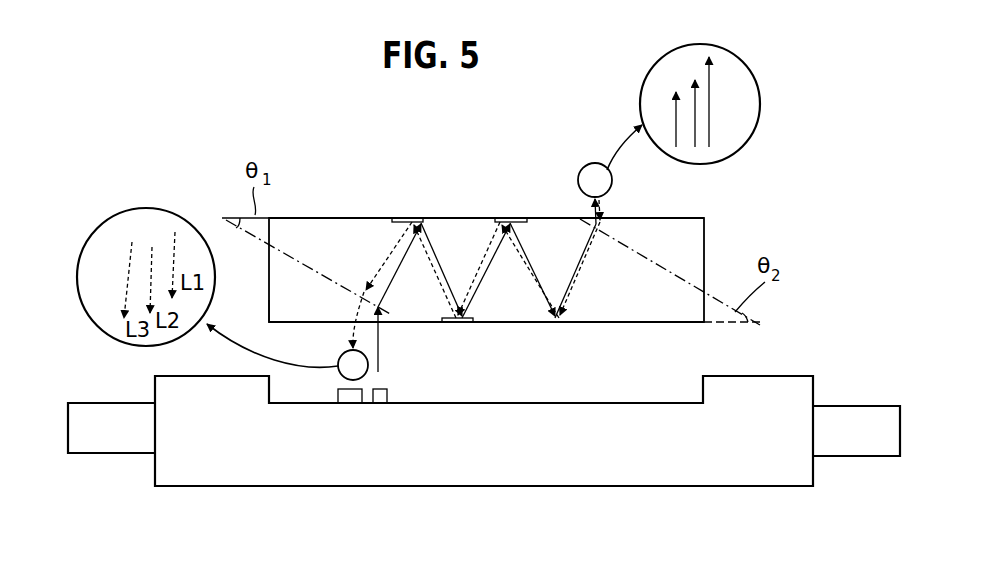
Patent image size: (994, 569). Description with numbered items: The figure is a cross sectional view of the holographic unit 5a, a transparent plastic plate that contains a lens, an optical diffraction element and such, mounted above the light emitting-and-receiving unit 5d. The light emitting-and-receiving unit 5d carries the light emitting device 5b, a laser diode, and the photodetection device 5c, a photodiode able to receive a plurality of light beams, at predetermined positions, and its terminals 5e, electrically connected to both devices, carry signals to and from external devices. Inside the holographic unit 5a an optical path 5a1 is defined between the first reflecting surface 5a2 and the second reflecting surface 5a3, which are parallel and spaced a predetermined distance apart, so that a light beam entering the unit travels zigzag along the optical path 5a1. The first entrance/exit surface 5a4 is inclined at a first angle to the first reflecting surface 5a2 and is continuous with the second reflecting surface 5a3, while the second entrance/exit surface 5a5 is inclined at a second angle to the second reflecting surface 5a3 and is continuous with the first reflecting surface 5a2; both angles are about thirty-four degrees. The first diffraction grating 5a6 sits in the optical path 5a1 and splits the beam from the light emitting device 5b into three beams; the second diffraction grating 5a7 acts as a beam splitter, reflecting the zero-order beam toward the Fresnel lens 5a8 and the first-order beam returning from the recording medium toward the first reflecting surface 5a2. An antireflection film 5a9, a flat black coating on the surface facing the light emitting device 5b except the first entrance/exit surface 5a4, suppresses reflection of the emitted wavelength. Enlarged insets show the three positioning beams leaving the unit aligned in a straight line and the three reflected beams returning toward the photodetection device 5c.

The holographic unit 5a is at (705, 224).
The optical path 5a1 is at (607, 290).
The first reflecting surface 5a2 is at (458, 217).
The second reflecting surface 5a3 is at (527, 318).
The first entrance/exit surface 5a4 is at (393, 317).
The second entrance/exit surface 5a5 is at (622, 240).
The first diffraction grating 5a6 is at (405, 215).
The second diffraction grating 5a7 is at (475, 322).
The Fresnel lens 5a8 is at (511, 217).
The antireflection film 5a9 is at (435, 323).
The light emitting device 5b is at (380, 405).
The photodetection device 5c is at (350, 405).
The light emitting-and-receiving unit 5d is at (603, 462).
The terminals 5e is at (88, 432).